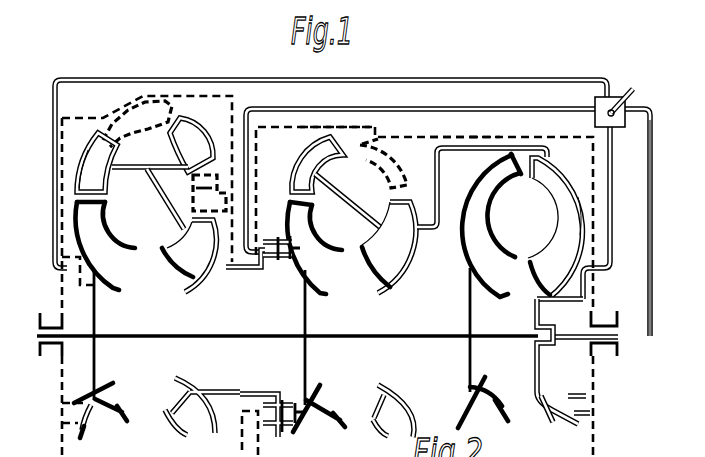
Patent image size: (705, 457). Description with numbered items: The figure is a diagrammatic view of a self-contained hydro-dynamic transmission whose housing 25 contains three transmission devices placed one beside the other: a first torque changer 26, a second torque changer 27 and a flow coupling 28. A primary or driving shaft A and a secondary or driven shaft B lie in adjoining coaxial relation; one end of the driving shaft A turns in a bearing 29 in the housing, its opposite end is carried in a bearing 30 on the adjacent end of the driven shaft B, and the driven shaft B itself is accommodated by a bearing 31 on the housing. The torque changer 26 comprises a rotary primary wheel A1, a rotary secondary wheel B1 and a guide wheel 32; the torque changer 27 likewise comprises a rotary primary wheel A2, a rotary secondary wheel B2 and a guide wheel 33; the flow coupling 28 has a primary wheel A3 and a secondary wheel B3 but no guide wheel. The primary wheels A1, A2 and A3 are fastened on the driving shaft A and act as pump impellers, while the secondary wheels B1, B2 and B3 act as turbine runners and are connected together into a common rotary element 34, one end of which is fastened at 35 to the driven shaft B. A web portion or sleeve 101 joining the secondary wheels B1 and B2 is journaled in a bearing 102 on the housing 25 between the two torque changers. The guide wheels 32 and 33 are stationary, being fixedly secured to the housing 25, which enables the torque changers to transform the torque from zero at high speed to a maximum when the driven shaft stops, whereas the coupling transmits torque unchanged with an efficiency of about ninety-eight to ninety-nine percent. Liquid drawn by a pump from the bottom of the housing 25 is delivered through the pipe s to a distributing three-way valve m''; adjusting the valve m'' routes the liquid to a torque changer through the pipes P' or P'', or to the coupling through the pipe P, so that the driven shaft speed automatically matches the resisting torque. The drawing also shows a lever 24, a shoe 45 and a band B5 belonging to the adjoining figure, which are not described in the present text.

The pipe P'' is at (331, 159).
The pipe P' is at (420, 150).
The pipe P is at (631, 222).
The pipe s is at (652, 200).
The three-way valve m'' is at (625, 92).
The rotary secondary wheel B1 is at (185, 138).
The rotary secondary wheel B2 is at (388, 257).
The rotary secondary wheel B3 is at (553, 183).
The secondary shaft B is at (576, 342).
The brake band B5 is at (327, 421).
The guide wheel 32 is at (148, 108).
The guide wheel 33 is at (378, 140).
The common rotary element 34 is at (482, 141).
The fastening point 35 is at (544, 331).
The housing 25 is at (298, 127).
The torque changer 26 is at (78, 174).
The torque changer 27 is at (352, 271).
The flow coupling 28 is at (575, 184).
The bearing 29 is at (51, 328).
The bearing 30 is at (551, 349).
The bearing 31 is at (604, 346).
The primary shaft A is at (189, 339).
The rotary primary wheel A1 is at (97, 231).
The rotary primary wheel A2 is at (313, 257).
The rotary primary wheel A3 is at (468, 253).
The web portion or sleeve 101 is at (229, 275).
The bearing 102 is at (252, 275).
The lever 24 is at (126, 420).
The brake shoe 45 is at (202, 417).